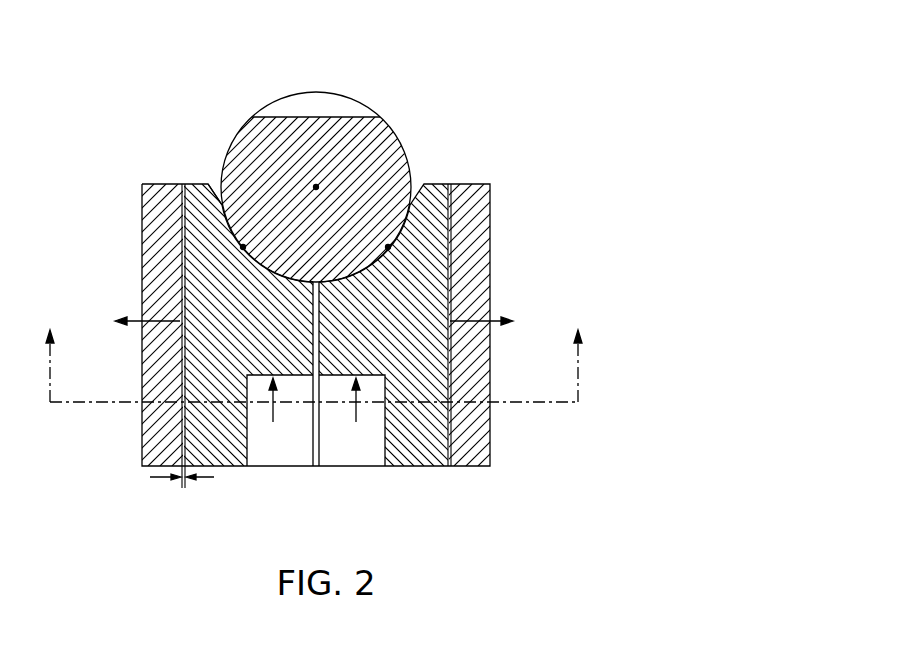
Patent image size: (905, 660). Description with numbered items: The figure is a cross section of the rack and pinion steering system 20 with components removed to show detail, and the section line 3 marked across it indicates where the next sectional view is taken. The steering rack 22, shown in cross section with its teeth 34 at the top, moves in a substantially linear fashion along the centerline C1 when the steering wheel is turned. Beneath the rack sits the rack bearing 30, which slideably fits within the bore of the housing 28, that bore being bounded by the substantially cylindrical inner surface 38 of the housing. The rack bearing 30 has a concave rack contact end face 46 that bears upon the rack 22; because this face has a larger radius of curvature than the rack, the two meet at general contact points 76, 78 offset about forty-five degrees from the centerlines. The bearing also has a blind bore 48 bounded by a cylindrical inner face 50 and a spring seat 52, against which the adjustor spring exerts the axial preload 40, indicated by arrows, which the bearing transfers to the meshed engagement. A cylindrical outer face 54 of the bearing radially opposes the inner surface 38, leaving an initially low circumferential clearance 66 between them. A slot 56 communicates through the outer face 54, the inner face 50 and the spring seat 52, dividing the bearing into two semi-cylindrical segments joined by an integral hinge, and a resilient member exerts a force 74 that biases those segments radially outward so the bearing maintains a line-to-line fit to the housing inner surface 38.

The rack and pinion steering system 20 is at (565, 58).
The steering rack 22 is at (410, 131).
The housing 28 is at (130, 438).
The rack bearing 30 is at (442, 172).
The teeth 34 is at (325, 105).
The inner surface 38 is at (182, 262).
The axial preload 40 is at (273, 420).
The rack contact end face 46 is at (226, 200).
The bore 48 is at (290, 455).
The inner face 50 is at (384, 443).
The spring seat 52 is at (321, 377).
The outer face 54 is at (182, 232).
The slot 56 is at (321, 292).
The clearance 66 is at (208, 480).
The force 74 is at (150, 320).
The contact point 76 is at (245, 246).
The contact point 78 is at (386, 246).
The centerline C1 is at (318, 184).
The section line 3- 3 is at (314, 350).